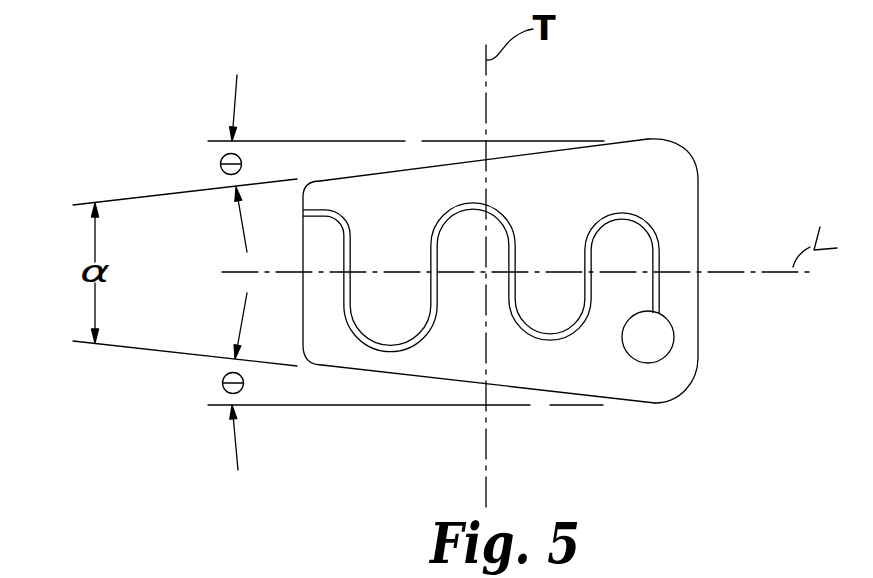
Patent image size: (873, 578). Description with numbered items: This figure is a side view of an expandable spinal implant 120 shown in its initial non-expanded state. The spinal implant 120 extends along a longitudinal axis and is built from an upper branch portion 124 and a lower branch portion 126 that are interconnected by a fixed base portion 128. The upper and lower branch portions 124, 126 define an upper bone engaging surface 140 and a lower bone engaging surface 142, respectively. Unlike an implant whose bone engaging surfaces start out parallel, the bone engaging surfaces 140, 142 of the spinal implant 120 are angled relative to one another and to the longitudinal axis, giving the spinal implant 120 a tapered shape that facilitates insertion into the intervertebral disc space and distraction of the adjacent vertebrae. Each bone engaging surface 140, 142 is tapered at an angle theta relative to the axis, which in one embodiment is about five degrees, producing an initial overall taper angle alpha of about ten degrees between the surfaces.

The expandable spinal implant 120 is at (287, 107).
The upper branch portion 124 is at (564, 115).
The lower branch portion 126 is at (422, 436).
The fixed base portion 128 is at (688, 235).
The upper bone engaging surface 140 is at (410, 168).
The lower bone engaging surface 142 is at (540, 391).